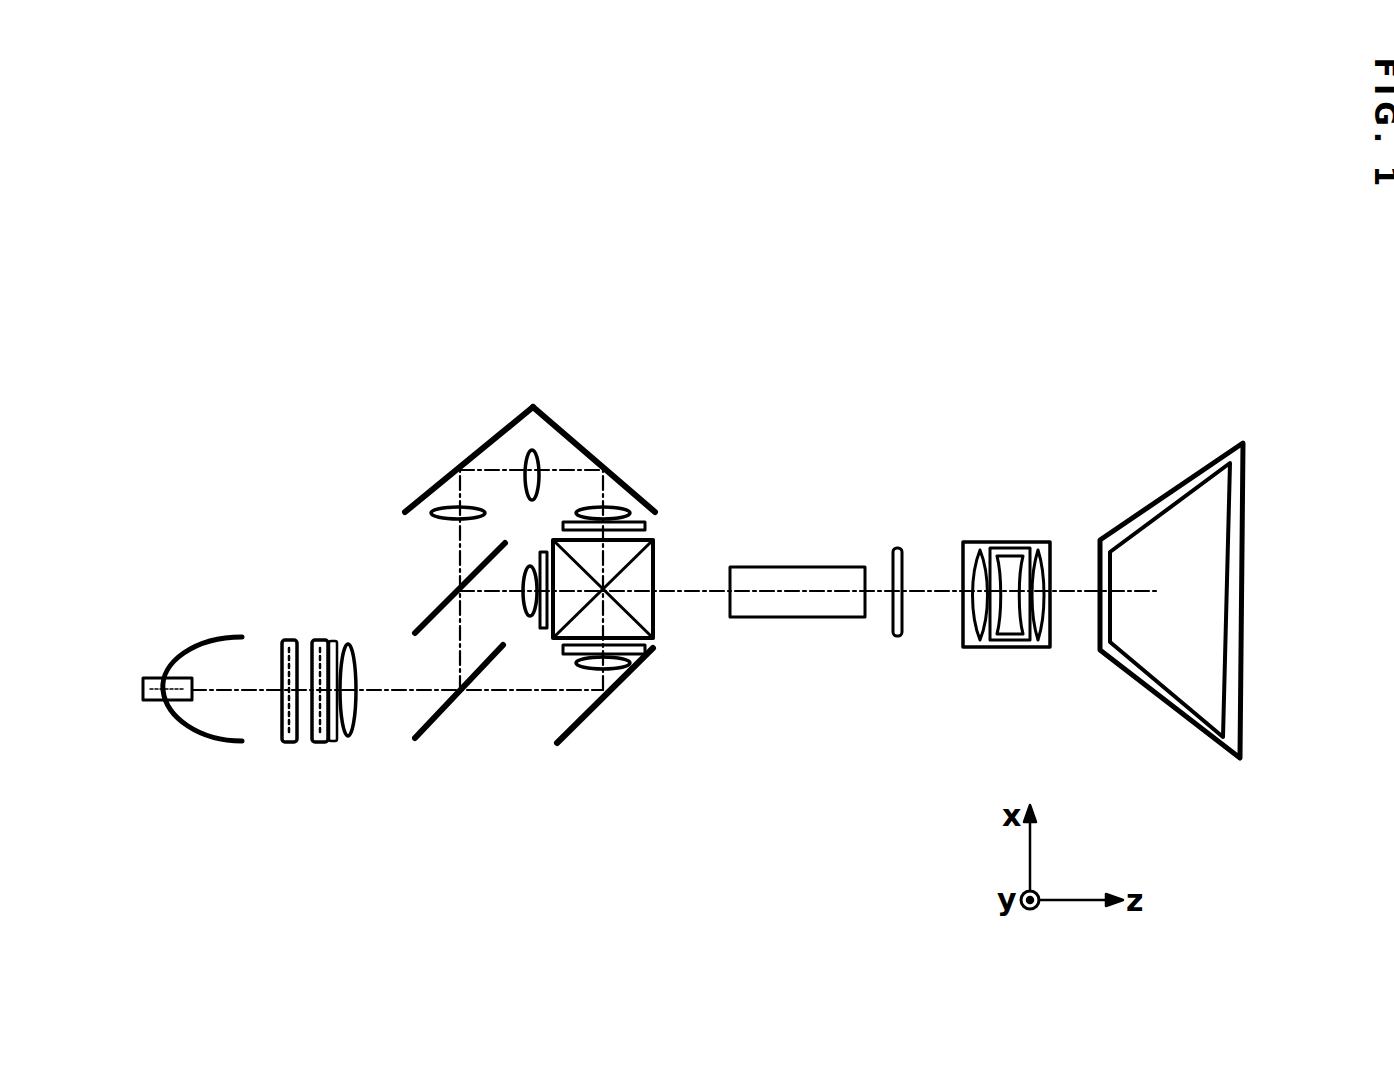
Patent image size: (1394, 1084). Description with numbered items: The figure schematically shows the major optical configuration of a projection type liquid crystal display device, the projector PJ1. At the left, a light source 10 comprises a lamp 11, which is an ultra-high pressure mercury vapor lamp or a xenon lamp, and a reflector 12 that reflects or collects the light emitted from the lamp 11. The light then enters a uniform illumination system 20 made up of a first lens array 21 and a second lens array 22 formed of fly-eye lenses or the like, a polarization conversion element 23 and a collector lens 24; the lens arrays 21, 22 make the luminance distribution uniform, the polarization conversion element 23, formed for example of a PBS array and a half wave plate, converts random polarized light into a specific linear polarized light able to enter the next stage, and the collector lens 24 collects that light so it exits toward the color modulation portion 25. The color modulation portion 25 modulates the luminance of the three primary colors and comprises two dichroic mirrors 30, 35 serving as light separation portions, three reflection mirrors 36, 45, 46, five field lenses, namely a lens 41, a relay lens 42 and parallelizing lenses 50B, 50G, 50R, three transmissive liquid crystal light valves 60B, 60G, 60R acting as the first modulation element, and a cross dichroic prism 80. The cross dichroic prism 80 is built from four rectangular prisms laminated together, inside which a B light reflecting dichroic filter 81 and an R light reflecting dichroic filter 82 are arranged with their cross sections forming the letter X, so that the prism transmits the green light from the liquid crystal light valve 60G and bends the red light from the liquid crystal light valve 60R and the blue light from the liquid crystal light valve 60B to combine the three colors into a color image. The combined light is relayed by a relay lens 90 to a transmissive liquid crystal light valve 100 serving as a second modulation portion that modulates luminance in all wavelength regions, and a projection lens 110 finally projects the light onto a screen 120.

The projector PJ1 is at (362, 334).
The light source 10 is at (188, 757).
The lamp 11 is at (151, 684).
The reflector 12 is at (205, 746).
The uniform illumination system 20 is at (322, 783).
The first lens array 21 is at (284, 744).
The second lens array 22 is at (318, 744).
The polarization conversion element 23 is at (333, 744).
The collector lens 24 is at (354, 733).
The color modulation portion 25 is at (503, 630).
The dichroic mirror 30 is at (440, 715).
The dichroic mirror 35 is at (430, 600).
The reflection mirror 36 is at (578, 740).
The lens 41 is at (468, 512).
The relay lens 42 is at (536, 450).
The reflection mirror 45 is at (470, 450).
The reflection mirror 46 is at (585, 450).
The parallelizing lens 50G is at (525, 598).
The parallelizing lens 50B is at (630, 510).
The parallelizing lens 50R is at (613, 672).
The transmissive liquid crystal light valve 60G is at (542, 560).
The transmissive liquid crystal light valve 60B is at (640, 527).
The transmissive liquid crystal light valve 60R is at (648, 658).
The cross dichroic prism 80 is at (636, 584).
The B light reflecting dichroic filter 81 is at (635, 560).
The R light reflecting dichroic filter 82 is at (640, 620).
The relay lens 90 is at (802, 620).
The transmissive liquid crystal light valve 100 is at (897, 640).
The projection lens 110 is at (1007, 542).
The screen 120 is at (1232, 632).